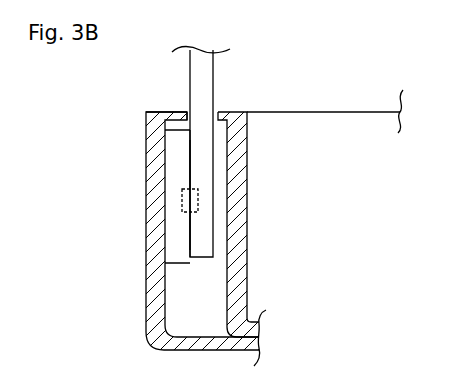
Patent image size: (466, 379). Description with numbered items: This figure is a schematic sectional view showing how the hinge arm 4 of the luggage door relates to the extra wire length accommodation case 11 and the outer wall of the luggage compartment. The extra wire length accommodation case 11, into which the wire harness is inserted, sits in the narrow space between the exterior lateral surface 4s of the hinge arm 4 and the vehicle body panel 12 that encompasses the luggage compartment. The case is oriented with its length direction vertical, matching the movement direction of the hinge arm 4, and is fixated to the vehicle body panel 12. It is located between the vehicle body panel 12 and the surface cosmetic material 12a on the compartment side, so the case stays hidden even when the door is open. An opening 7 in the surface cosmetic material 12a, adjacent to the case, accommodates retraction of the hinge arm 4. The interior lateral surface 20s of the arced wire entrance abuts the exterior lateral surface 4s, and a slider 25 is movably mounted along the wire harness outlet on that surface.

The hinge arm 4 is at (213, 90).
The exterior lateral surface 4s is at (190, 157).
The opening 7 is at (187, 110).
The extra wire length accommodation case 11 is at (176, 240).
The vehicle body panel 12 is at (146, 167).
The surface cosmetic material 12a is at (247, 267).
The interior lateral surface 20s is at (188, 226).
The slider 25 is at (199, 192).